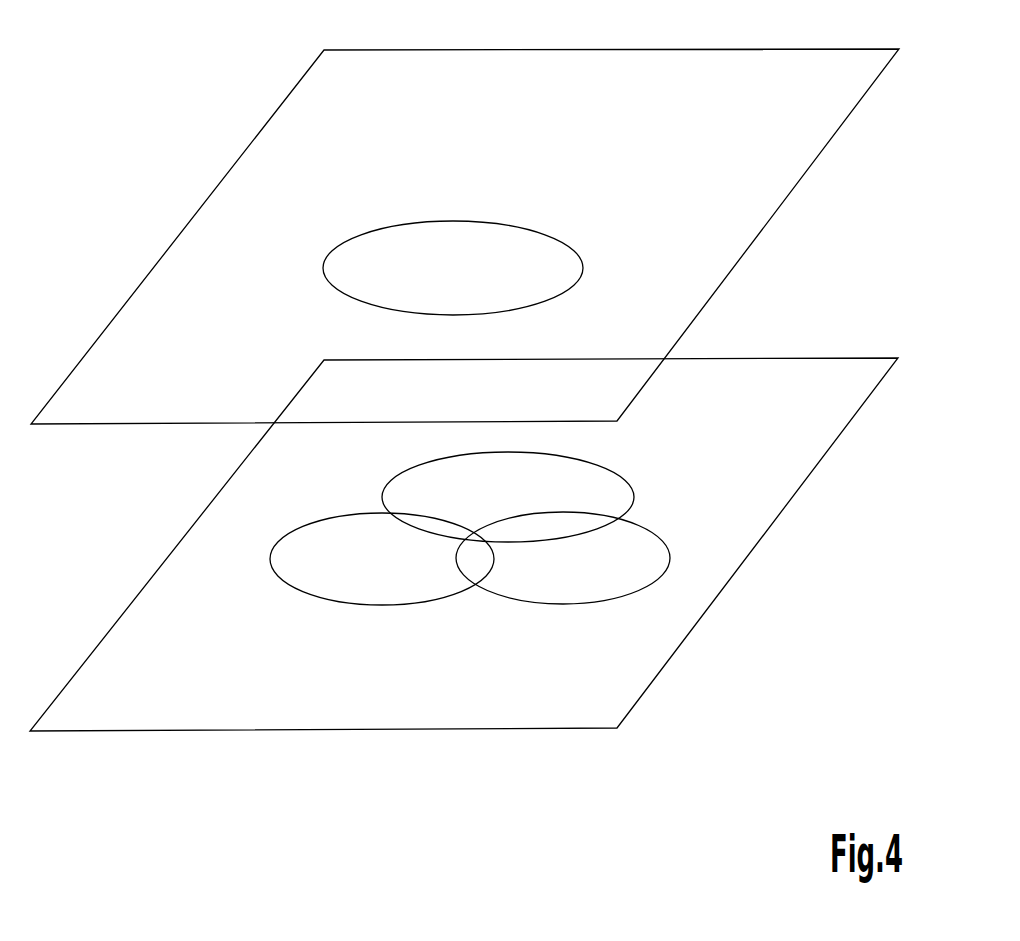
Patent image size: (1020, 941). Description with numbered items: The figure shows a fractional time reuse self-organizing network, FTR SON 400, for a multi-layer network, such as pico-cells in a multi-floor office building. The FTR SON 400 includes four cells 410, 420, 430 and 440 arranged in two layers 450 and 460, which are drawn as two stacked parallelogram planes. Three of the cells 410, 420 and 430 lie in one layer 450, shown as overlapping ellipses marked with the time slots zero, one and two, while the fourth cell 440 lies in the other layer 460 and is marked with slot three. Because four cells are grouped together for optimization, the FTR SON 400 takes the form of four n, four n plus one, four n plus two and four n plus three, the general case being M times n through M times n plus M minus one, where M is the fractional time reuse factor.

The FTR SON 400 is at (149, 104).
The cell 410 is at (365, 605).
The cell 420 is at (617, 477).
The cell 430 is at (663, 553).
The cell 440 is at (477, 222).
The layer 450 is at (803, 358).
The layer 460 is at (820, 155).